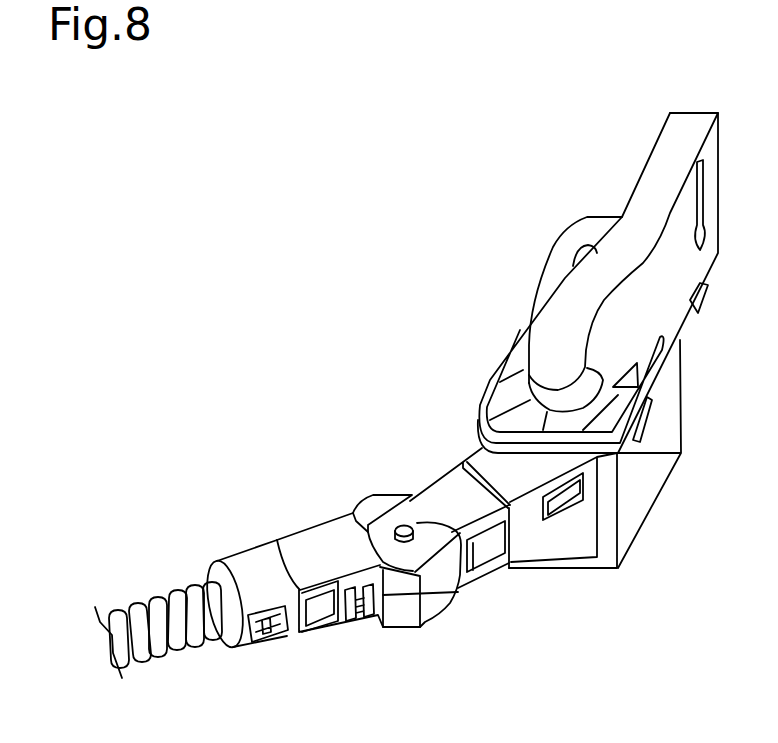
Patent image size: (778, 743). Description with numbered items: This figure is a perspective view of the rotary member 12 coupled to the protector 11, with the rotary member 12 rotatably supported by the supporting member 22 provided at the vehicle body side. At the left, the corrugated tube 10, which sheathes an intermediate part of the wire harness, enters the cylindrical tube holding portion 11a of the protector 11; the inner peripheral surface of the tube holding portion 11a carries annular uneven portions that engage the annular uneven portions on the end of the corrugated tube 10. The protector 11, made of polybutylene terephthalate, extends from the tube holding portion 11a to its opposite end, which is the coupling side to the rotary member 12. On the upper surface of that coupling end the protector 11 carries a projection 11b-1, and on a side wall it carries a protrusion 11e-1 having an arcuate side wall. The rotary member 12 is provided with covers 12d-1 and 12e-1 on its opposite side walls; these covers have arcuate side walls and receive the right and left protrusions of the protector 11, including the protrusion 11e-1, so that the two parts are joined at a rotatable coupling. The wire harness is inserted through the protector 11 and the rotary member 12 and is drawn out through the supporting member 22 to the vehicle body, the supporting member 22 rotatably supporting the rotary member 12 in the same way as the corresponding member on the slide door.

The corrugated tube 10 is at (187, 637).
The protector 11 is at (294, 512).
The tube holding portion 11a is at (247, 562).
The projection 11b-1 is at (460, 537).
The protrusion 11e-1 is at (397, 615).
The rotary member 12 is at (433, 473).
The cover 12d-1 is at (378, 500).
The cover 12e-1 is at (436, 602).
The supporting member 22 is at (525, 278).